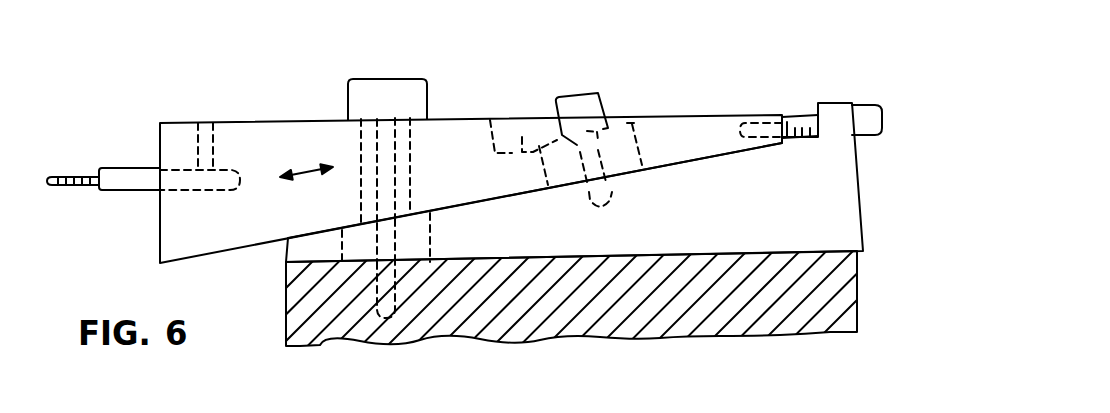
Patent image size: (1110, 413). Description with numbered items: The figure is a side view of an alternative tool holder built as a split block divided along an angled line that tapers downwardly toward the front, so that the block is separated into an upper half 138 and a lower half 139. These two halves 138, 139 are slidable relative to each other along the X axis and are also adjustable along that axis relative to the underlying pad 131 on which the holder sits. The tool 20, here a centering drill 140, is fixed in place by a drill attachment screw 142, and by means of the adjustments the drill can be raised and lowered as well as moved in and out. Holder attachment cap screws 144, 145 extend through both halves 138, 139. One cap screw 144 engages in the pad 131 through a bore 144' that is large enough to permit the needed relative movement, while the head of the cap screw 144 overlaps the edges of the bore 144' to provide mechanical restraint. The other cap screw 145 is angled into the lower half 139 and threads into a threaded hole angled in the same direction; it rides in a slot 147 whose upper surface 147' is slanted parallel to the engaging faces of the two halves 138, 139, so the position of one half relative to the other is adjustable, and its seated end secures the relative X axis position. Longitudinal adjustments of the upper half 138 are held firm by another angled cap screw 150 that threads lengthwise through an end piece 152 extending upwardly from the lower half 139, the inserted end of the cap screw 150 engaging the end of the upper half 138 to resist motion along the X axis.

The tool 20 is at (73, 175).
The centering drill 140 is at (130, 167).
The drill attachment screw 142 is at (207, 120).
The upper half 138 is at (293, 118).
The holder attachment cap screw 144 is at (391, 167).
The bore 144' is at (456, 106).
The upper surface 147' is at (526, 88).
The holder attachment cap screw 145 is at (584, 95).
The slot 147 is at (598, 138).
The lower half 139 is at (715, 187).
The end piece 152 is at (828, 102).
The angled cap screw 150 is at (867, 102).
The pad 131 is at (805, 302).